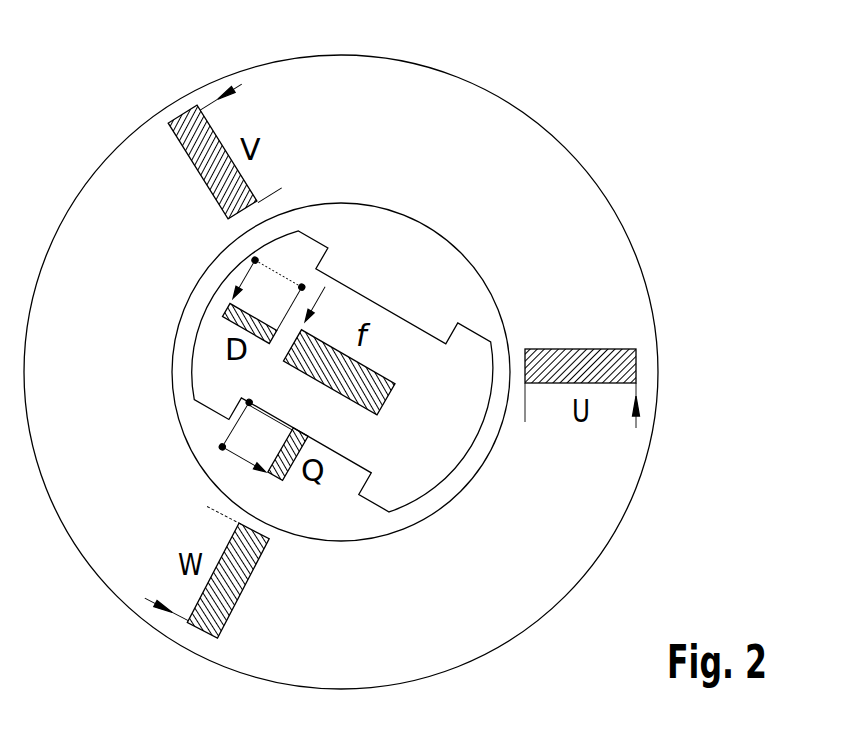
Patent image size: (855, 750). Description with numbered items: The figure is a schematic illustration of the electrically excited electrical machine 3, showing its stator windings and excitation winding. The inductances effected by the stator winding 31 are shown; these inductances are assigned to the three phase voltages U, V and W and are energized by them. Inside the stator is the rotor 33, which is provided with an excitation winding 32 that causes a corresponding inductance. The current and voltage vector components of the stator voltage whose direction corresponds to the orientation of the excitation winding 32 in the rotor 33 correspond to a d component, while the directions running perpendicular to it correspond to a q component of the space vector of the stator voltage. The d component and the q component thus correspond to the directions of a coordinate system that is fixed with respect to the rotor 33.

The electrically excited electrical machine 3 is at (688, 116).
The stator winding 31 is at (198, 177).
The excitation winding 32 is at (392, 402).
The rotor 33 is at (466, 341).